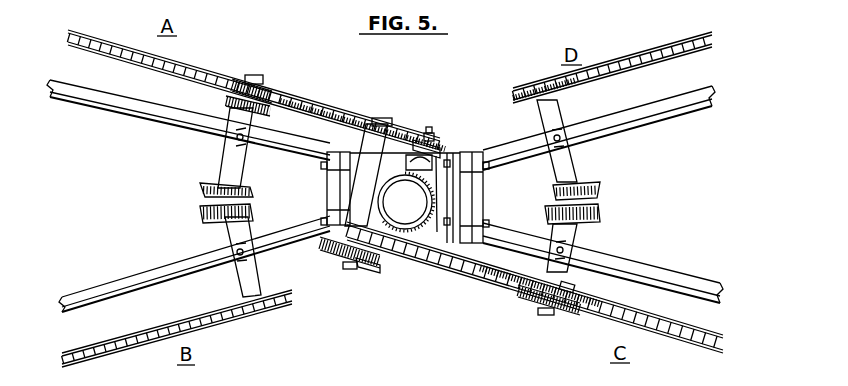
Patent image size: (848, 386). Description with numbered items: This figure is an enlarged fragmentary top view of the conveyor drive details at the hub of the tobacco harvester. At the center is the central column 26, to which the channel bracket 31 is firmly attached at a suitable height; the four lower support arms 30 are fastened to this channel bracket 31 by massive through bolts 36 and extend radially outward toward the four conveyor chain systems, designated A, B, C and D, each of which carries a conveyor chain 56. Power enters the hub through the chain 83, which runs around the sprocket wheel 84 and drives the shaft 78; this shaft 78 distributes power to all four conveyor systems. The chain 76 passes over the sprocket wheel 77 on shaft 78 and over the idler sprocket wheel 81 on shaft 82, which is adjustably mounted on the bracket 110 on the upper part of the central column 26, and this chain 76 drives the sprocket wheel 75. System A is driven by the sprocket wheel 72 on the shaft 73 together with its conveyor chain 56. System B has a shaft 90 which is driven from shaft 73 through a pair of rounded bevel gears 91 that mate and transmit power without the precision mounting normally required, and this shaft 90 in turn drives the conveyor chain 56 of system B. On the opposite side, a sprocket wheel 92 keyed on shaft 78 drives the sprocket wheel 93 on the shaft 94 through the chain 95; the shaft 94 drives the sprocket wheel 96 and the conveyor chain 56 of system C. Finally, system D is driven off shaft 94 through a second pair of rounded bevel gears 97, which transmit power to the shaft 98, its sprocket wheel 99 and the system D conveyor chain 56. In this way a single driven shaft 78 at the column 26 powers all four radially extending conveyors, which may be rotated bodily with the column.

The central column 26 is at (418, 222).
The lower support arms 30 is at (160, 114).
The channel bracket 31 is at (342, 190).
The through bolts 36 is at (338, 162).
The conveyor chain 56 is at (138, 48).
The sprocket wheel 72 is at (268, 88).
The shaft 73 is at (254, 76).
The sprocket wheel 75 is at (228, 101).
The chain 76 is at (292, 106).
The sprocket wheel 77 is at (376, 124).
The shaft 78 is at (386, 118).
The idler sprocket wheel 81 is at (416, 140).
The shaft 82 is at (430, 128).
The chain 83 is at (362, 268).
The sprocket wheel 84 is at (332, 252).
The shaft 90 is at (250, 276).
The rounded bevel gears 91 is at (200, 192).
The sprocket wheel 92 is at (326, 222).
The sprocket wheel 93 is at (571, 287).
The shaft 94 is at (565, 243).
The chain 95 is at (480, 268).
The sprocket wheel 96 is at (522, 298).
The rounded bevel gears 97 is at (590, 200).
The shaft 98 is at (548, 118).
The sprocket wheel 99 is at (516, 100).
The bracket 110 is at (408, 169).